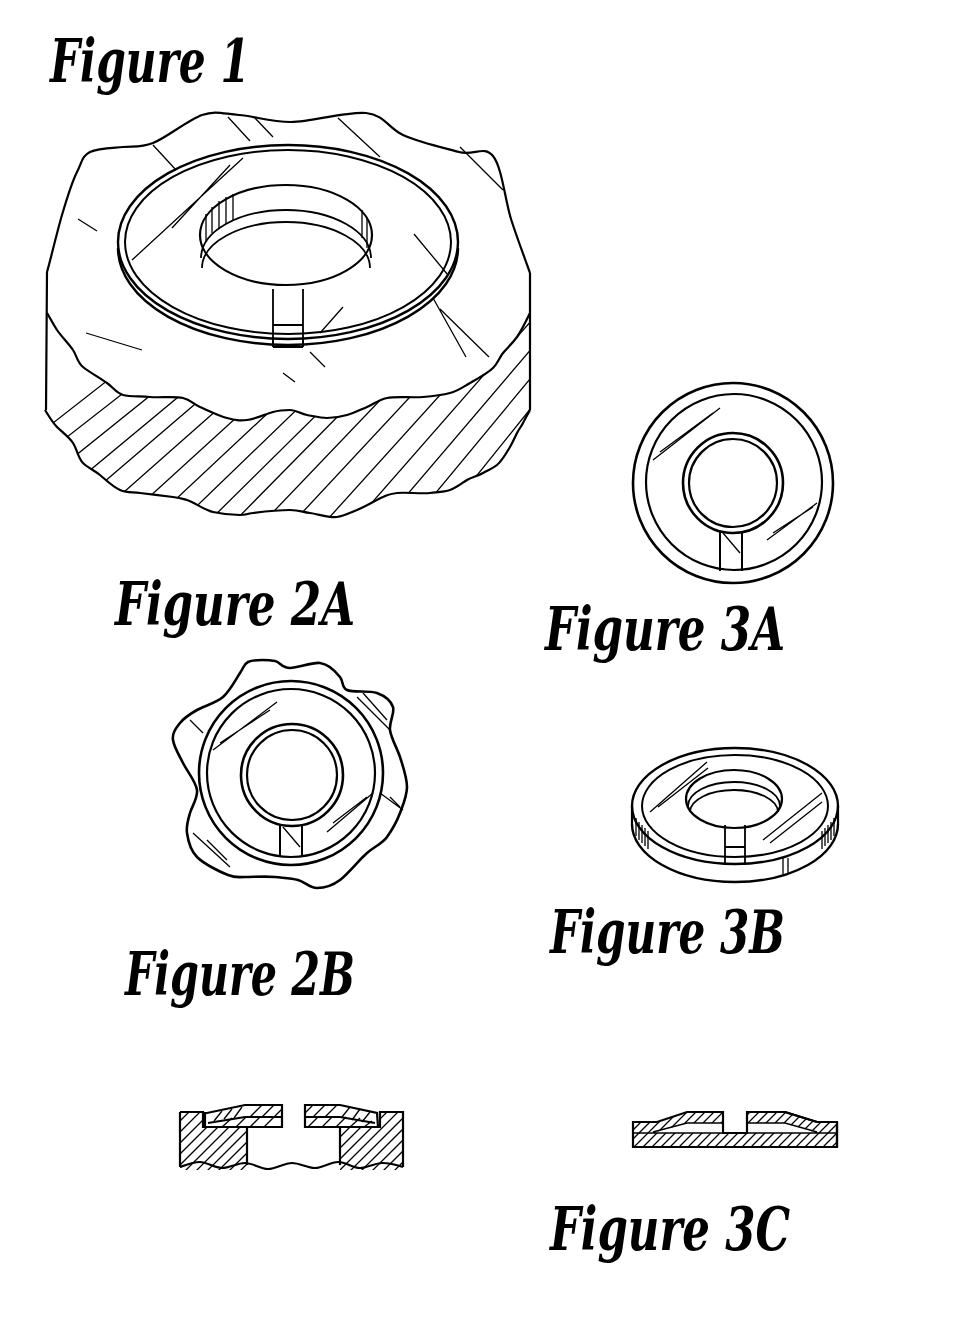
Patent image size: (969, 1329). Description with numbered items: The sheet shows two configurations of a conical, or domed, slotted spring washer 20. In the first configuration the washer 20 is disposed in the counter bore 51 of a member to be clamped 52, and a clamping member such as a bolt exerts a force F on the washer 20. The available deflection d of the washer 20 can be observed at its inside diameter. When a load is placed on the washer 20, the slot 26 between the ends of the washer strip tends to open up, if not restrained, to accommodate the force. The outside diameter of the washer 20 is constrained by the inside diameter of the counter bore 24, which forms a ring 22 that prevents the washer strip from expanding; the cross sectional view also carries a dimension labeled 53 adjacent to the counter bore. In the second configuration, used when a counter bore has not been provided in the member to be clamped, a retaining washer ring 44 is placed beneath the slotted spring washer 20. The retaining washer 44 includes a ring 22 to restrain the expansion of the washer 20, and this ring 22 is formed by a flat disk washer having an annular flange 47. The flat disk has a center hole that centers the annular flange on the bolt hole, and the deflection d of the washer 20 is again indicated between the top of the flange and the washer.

In FIG. 1, the slotted spring washer 20 is at (382, 182).
In FIG. 3B, the slotted spring washer 20 is at (782, 772).
In FIG. 3C, the ring 22 is at (633, 1130).
In FIG. 2B, the counter bore 24 is at (370, 1057).
In FIG. 1, the slot 26 is at (288, 296).
In FIG. 3C, the retaining washer ring 44 is at (850, 1133).
In FIG. 3C, the annular flange 47 is at (823, 1122).
In FIG. 1, the counter bore 51 is at (282, 349).
In FIG. 1, the member to be clamped 52 is at (508, 290).
In FIG. 2B, the recess depth dimension 53 is at (447, 1127).
In FIG. 1, the force F is at (278, 168).
In FIG. 1, the available deflection d is at (297, 243).
In FIG. 3B, the available deflection d is at (725, 805).
In FIG. 2B, the available deflection d is at (263, 1137).
In FIG. 3C, the available deflection d is at (705, 1157).